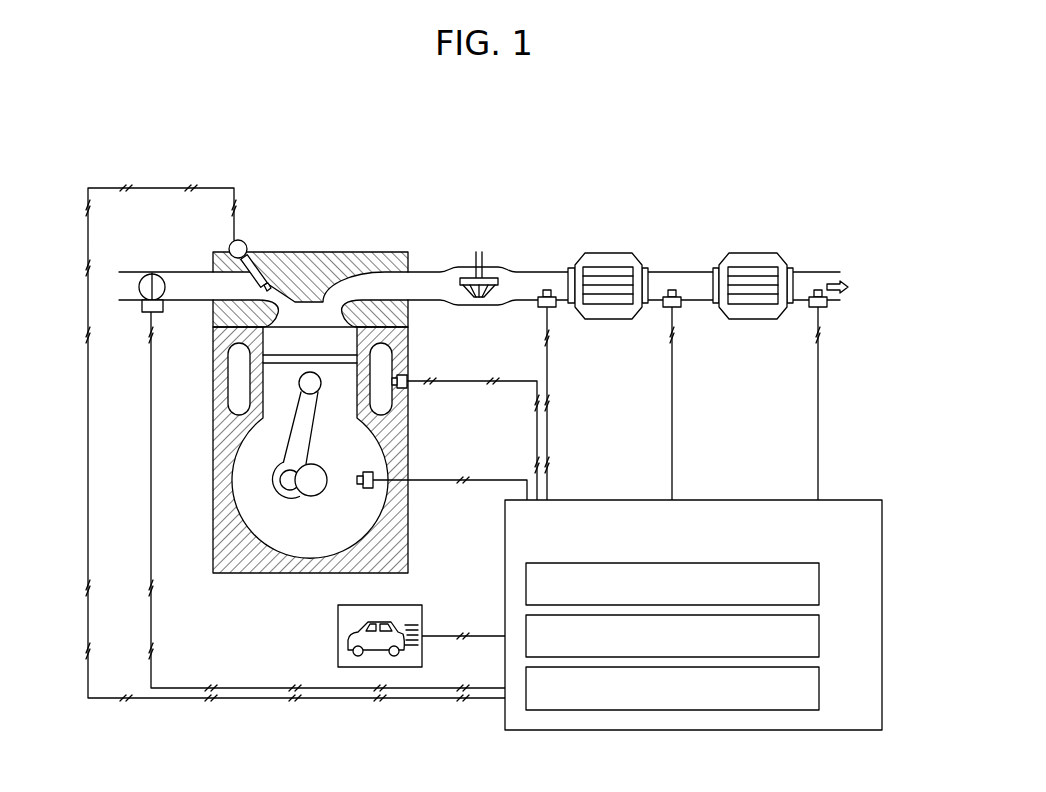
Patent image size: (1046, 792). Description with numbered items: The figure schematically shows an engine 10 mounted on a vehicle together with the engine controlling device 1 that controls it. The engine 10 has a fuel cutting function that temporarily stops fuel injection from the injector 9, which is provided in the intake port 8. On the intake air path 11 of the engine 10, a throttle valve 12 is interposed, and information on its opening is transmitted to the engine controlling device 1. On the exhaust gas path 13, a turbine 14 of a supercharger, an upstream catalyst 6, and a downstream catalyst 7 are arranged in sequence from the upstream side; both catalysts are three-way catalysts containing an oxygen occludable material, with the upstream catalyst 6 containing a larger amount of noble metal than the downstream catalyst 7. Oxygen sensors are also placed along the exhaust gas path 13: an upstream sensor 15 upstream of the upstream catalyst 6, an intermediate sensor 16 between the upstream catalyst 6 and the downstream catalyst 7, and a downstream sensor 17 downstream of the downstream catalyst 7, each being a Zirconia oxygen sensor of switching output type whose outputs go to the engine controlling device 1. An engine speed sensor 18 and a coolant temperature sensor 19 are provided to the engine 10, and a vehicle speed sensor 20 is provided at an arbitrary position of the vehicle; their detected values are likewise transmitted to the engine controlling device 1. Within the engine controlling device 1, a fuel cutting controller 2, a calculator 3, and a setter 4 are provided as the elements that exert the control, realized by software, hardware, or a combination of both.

The engine controlling device 1 is at (712, 615).
The fuel cutting controller 2 is at (820, 584).
The calculator 3 is at (820, 635).
The setter 4 is at (820, 687).
The upstream catalyst 6 is at (610, 253).
The downstream catalyst 7 is at (758, 253).
The intake port 8 is at (252, 293).
The injector 9 is at (244, 243).
The engine 10 is at (377, 244).
The intake air path 11 is at (143, 270).
The throttle valve 12 is at (165, 283).
The exhaust gas path 13 is at (440, 272).
The turbine 14 is at (468, 297).
The upstream sensor 15 is at (540, 310).
The intermediate sensor 16 is at (665, 307).
The downstream sensor 17 is at (810, 307).
The engine speed sensor 18 is at (375, 490).
The coolant temperature sensor 19 is at (408, 400).
The vehicle speed sensor 20 is at (338, 638).